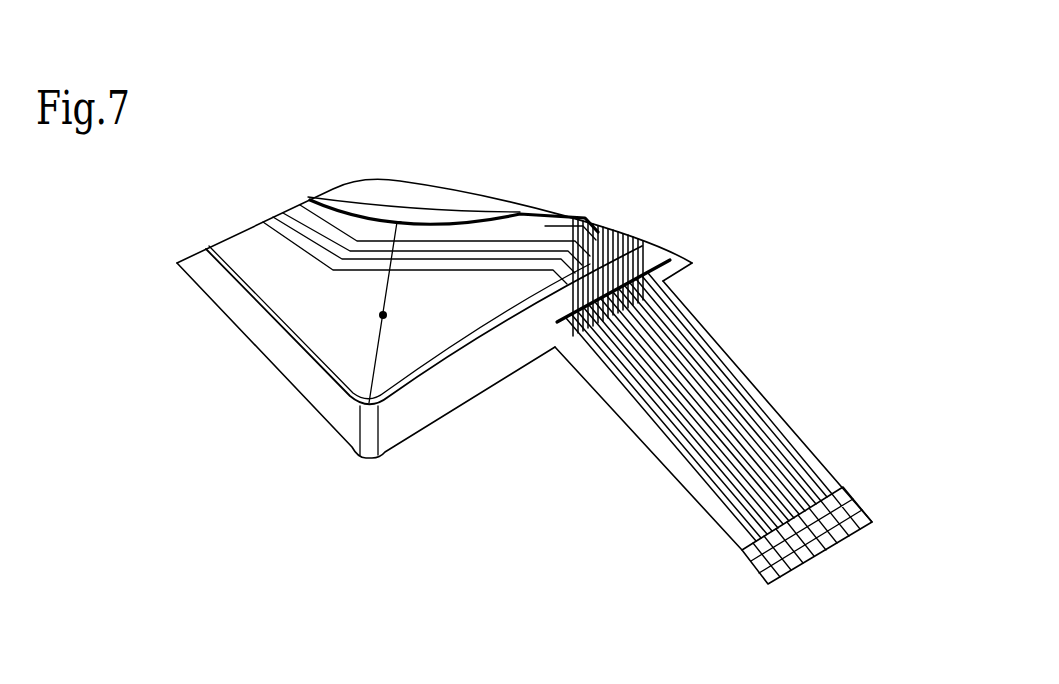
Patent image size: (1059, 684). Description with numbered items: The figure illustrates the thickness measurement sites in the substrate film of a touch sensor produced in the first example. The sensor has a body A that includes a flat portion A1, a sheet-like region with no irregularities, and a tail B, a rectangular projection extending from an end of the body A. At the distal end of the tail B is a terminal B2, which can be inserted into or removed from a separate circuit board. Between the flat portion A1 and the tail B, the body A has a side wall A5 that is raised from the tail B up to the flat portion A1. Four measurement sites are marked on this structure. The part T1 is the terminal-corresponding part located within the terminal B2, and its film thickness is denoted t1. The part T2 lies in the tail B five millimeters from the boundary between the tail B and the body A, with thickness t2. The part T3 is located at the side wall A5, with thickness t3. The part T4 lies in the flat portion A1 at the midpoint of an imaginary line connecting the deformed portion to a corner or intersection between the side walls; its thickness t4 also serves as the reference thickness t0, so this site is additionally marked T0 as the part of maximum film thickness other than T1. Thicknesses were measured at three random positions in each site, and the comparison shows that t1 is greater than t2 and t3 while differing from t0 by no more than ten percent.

The body A is at (250, 257).
The flat portion A1 is at (323, 313).
The side wall A5 is at (311, 382).
The part having maximum thickness of substrate film T0 is at (447, 340).
The part located in the flat portion T4 is at (447, 340).
The part located at the side wall T3 is at (666, 258).
The part located in the tail T2 is at (664, 352).
The tail B is at (653, 452).
The terminal B2 is at (852, 498).
The part located within the terminal T1 is at (775, 551).